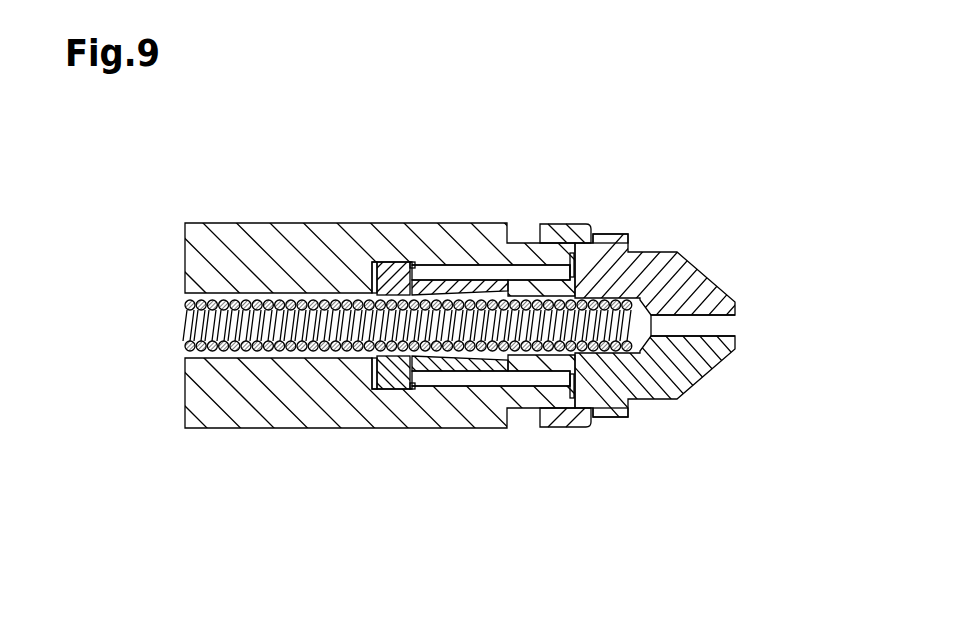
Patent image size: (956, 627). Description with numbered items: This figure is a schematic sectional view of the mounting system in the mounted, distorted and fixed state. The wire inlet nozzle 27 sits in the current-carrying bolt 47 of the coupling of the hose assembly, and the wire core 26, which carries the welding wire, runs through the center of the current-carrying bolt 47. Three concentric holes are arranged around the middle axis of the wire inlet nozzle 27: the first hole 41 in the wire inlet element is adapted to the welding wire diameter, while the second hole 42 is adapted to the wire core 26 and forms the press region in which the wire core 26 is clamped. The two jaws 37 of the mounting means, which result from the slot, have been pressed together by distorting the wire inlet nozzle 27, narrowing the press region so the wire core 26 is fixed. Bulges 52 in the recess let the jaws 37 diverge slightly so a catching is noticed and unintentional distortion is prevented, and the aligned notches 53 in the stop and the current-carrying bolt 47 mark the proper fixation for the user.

The wire core 26 is at (290, 347).
The wire inlet nozzle 27 is at (722, 219).
The jaws 37 is at (481, 283).
The first hole 41 is at (682, 327).
The second hole 42 is at (451, 285).
The current-carrying bolt 47 is at (330, 237).
The bulges 52 is at (411, 263).
The notches 53 is at (563, 228).